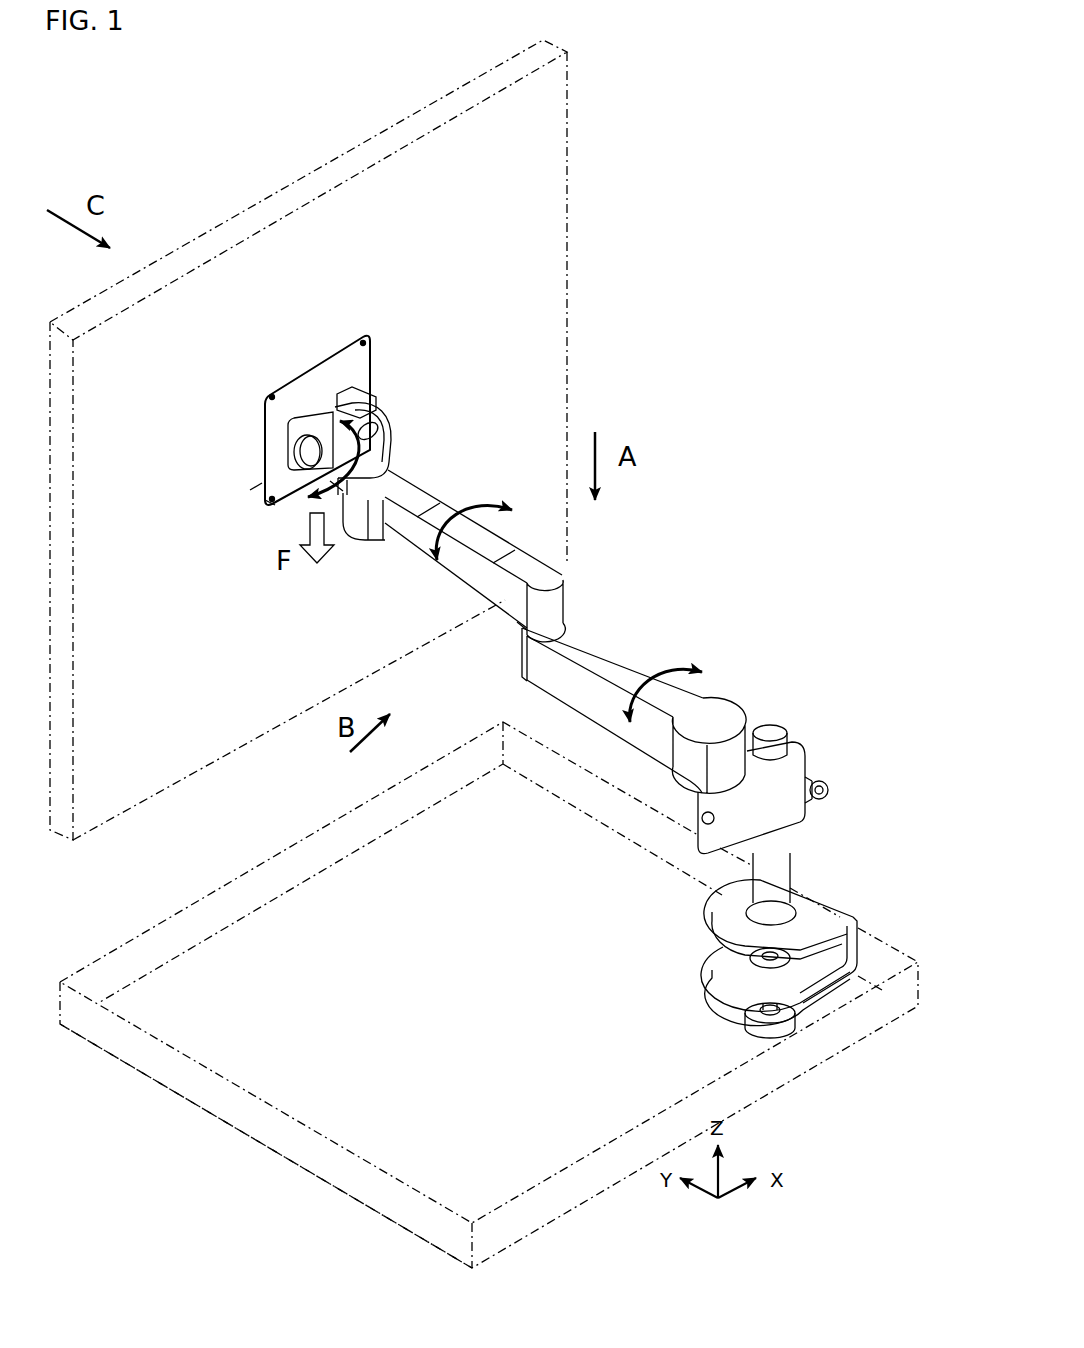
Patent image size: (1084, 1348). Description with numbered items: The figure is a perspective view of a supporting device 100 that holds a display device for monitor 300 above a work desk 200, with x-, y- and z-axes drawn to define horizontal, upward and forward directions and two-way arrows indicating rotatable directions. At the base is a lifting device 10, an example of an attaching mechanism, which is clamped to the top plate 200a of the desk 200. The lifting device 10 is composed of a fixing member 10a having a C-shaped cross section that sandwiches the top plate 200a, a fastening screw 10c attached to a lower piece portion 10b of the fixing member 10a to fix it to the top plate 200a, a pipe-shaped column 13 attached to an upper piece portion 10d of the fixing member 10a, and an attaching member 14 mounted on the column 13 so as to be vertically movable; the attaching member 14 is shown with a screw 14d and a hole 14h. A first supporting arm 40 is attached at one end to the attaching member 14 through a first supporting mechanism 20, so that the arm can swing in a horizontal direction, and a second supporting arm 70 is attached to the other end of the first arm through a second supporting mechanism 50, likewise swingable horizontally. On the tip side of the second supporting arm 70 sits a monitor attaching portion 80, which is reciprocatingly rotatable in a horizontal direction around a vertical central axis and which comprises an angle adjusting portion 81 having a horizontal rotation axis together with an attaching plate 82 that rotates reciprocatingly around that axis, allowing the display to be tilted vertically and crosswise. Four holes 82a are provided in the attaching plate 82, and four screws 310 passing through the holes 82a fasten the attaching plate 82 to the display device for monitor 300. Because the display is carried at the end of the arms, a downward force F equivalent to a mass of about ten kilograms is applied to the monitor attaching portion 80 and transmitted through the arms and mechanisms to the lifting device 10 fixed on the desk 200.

The supporting device 100 is at (696, 597).
The display device for monitor 300 is at (567, 232).
The screws 310 is at (255, 490).
The desk 200 is at (186, 1078).
The top plate 200a is at (297, 1168).
The monitor attaching portion 80 is at (441, 386).
The angle adjusting portion 81 is at (363, 388).
The attaching plate 82 is at (302, 386).
The holes 82a is at (272, 500).
The second supporting arm 70 is at (415, 498).
The second supporting mechanism 50 is at (499, 633).
The first supporting arm 40 is at (598, 655).
The first supporting mechanism 20 is at (688, 797).
The lifting device 10 is at (806, 836).
The attaching member 14 is at (803, 775).
The screw 14d is at (826, 783).
The hole 14h is at (705, 823).
The column 13 is at (775, 855).
The fixing member 10a is at (856, 935).
The lower piece portion 10b is at (718, 975).
The fastening screw 10c is at (785, 1028).
The upper piece portion 10d is at (742, 913).